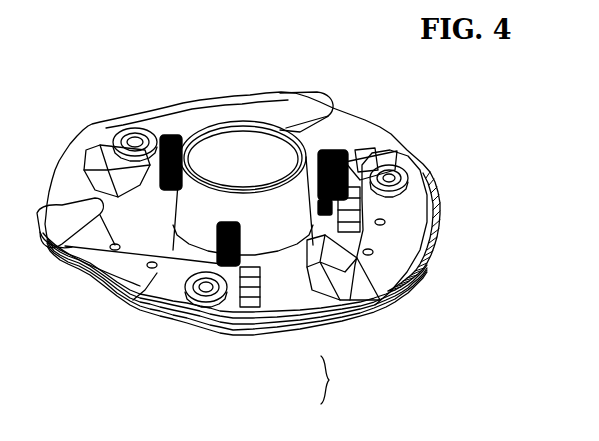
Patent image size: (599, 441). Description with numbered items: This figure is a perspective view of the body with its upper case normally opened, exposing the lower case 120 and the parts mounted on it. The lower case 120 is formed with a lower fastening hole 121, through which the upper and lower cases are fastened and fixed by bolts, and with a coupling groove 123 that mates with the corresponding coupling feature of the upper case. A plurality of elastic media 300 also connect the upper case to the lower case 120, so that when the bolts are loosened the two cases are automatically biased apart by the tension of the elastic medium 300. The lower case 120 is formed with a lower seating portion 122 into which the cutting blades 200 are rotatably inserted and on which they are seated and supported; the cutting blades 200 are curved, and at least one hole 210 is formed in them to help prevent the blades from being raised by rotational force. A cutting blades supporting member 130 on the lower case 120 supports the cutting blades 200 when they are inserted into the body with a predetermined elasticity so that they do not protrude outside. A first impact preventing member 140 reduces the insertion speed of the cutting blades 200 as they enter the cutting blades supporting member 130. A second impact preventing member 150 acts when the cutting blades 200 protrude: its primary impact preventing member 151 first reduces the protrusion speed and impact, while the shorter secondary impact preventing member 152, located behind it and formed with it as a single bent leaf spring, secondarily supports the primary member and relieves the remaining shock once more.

The lower case 120 is at (95, 140).
The lower fastening hole 121 is at (228, 156).
The lower seating portion 122 is at (403, 171).
The coupling groove 123 is at (134, 128).
The cutting blades supporting member 130 is at (372, 299).
The first impact preventing member 140 is at (130, 305).
The second impact preventing member 150 is at (375, 146).
The primary impact preventing member 151 is at (243, 300).
The secondary impact preventing member 152 is at (248, 300).
The cutting blades 200 is at (407, 216).
The hole 210 is at (396, 278).
The elastic medium 300 is at (197, 330).